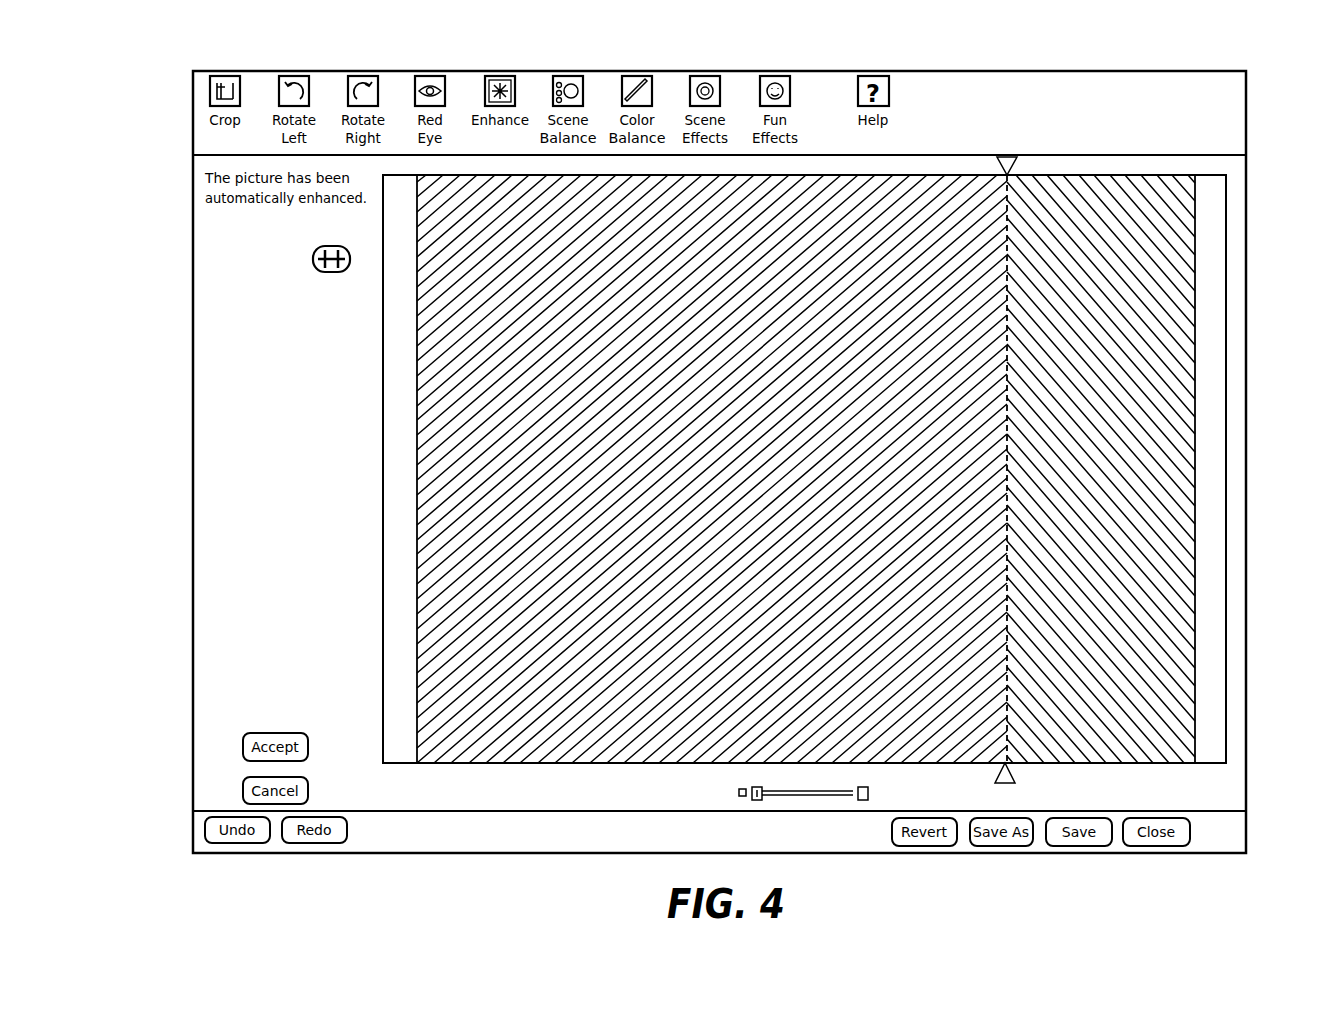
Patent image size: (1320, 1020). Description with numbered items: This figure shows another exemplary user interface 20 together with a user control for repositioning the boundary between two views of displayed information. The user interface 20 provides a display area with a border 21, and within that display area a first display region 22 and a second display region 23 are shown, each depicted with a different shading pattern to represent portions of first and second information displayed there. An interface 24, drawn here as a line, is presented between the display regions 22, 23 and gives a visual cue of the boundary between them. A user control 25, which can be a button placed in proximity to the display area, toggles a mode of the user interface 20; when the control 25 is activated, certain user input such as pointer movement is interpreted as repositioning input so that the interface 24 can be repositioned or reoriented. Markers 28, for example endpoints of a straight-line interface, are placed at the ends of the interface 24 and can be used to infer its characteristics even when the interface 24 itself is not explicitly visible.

The user interface 20 is at (186, 272).
The border 21 is at (537, 175).
The first display region 22 is at (747, 210).
The second display region 23 is at (1165, 272).
The interface 24 is at (1007, 345).
The user control 25 is at (313, 259).
The markers 28 is at (1007, 157).